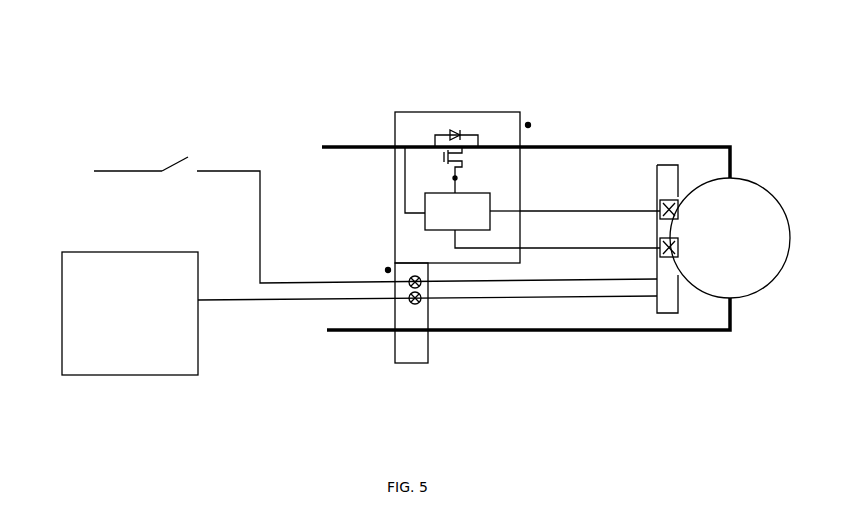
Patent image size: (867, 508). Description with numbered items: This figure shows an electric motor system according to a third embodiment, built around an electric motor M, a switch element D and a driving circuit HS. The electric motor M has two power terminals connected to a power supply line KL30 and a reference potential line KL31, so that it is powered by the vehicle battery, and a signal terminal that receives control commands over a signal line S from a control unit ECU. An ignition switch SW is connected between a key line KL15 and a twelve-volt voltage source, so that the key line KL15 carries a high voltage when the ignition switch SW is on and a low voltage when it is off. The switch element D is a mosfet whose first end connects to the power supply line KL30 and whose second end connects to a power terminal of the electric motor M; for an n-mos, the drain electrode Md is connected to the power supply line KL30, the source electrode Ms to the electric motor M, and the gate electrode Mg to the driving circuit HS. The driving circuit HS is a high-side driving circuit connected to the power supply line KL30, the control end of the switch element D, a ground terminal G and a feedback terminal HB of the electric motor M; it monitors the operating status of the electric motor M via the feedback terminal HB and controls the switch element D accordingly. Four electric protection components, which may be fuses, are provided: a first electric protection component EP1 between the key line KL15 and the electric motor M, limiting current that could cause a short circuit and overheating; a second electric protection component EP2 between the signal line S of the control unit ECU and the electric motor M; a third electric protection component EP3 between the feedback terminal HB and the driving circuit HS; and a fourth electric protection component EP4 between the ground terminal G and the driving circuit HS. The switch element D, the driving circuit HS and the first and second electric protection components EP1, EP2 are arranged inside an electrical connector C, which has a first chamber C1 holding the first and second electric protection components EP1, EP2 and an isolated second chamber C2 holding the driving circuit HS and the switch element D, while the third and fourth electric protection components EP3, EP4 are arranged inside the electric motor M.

The power supply line KL30 is at (343, 146).
The reference potential line KL31 is at (333, 332).
The key line KL15 is at (262, 171).
The electrical connector C is at (517, 112).
The first chamber C1 is at (388, 270).
The second chamber C2 is at (528, 125).
The drain electrode Md is at (425, 146).
The source electrode Ms is at (500, 146).
The gate electrode Mg is at (455, 178).
The switch element D is at (437, 135).
The driving circuit HS is at (435, 218).
The feedback terminal HB is at (610, 211).
The ground terminal G is at (585, 250).
The first electric protection component EP1 is at (427, 287).
The second electric protection component EP2 is at (410, 300).
The third electric protection component EP3 is at (672, 200).
The fourth electric protection component EP4 is at (672, 257).
The signal line S is at (238, 303).
The ignition switch SW is at (192, 153).
The control unit ECU is at (165, 363).
The electric motor M is at (757, 275).